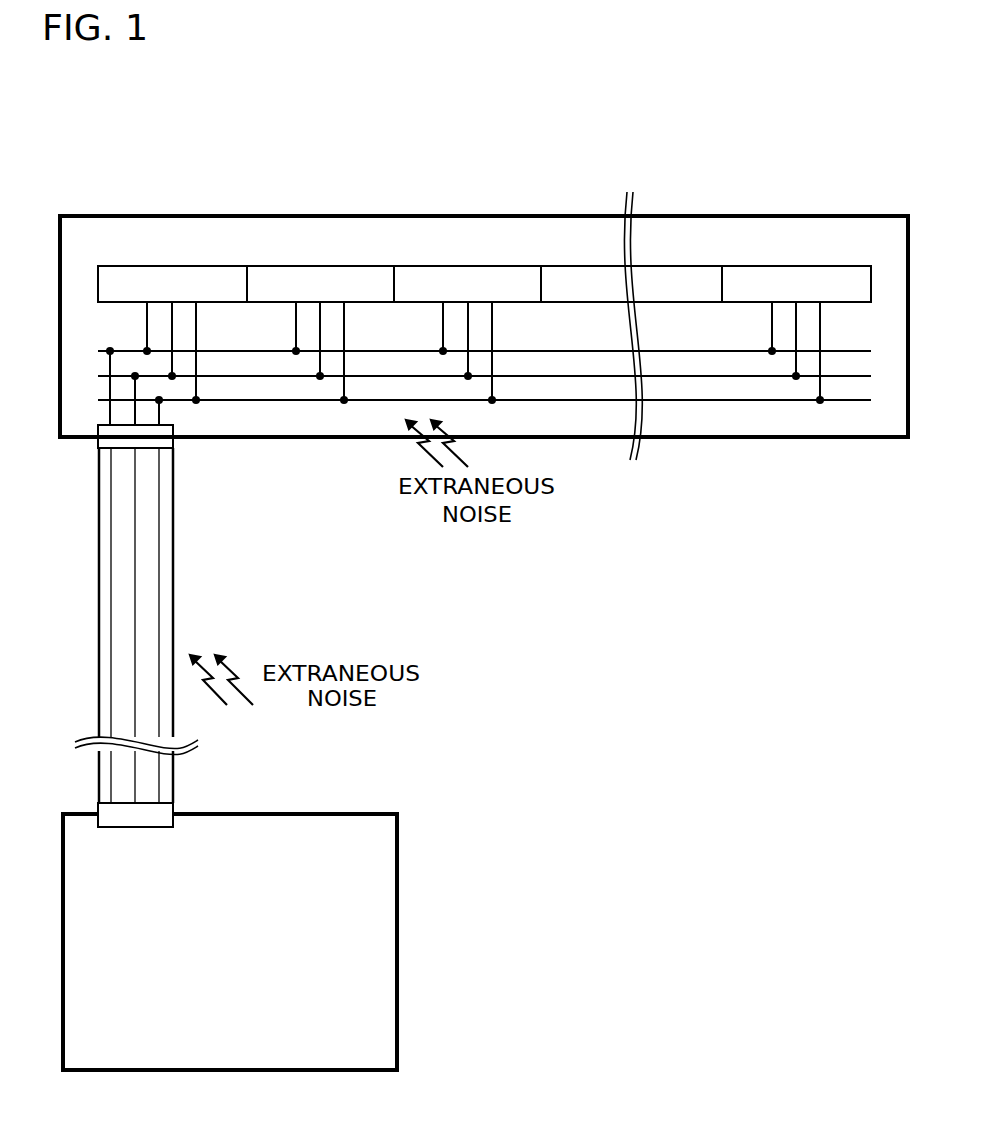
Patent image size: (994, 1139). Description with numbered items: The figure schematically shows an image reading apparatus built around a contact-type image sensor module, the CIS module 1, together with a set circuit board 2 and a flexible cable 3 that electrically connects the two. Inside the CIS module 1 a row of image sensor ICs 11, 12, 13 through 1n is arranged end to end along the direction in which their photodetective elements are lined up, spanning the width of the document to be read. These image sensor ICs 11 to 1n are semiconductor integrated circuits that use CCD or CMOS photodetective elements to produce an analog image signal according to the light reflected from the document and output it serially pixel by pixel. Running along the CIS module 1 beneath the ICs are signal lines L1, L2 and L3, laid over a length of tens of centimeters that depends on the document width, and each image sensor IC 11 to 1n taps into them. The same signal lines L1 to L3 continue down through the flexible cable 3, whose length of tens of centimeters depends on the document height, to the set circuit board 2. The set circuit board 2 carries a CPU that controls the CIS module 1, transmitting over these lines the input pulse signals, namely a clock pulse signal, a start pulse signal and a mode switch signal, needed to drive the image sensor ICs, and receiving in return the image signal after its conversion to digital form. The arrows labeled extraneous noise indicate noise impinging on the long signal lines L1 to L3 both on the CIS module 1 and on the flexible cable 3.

The CIS module 1 is at (344, 216).
The image sensor IC 11 is at (175, 265).
The image sensor IC 12 is at (320, 265).
The image sensor IC 13 is at (469, 265).
The image sensor IC 1n is at (796, 265).
The set circuit board 2 is at (286, 813).
The flexible cable 3 is at (98, 658).
The signal line L1 is at (112, 496).
The signal line L2 is at (136, 546).
The signal line L3 is at (160, 594).